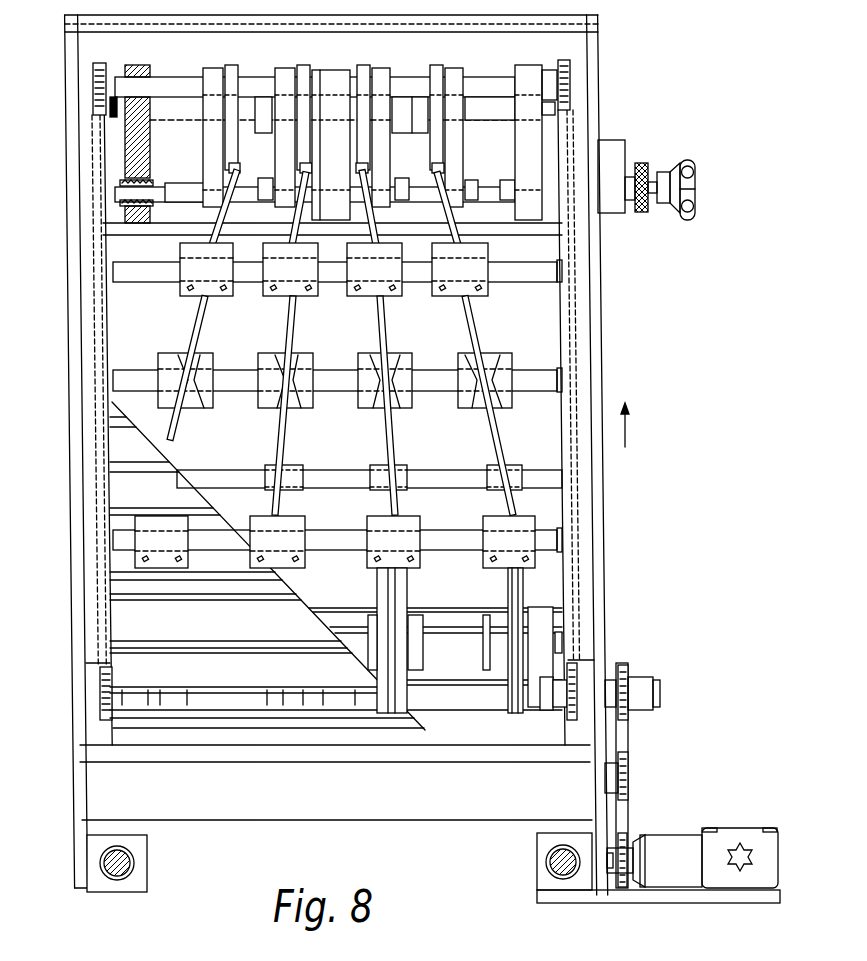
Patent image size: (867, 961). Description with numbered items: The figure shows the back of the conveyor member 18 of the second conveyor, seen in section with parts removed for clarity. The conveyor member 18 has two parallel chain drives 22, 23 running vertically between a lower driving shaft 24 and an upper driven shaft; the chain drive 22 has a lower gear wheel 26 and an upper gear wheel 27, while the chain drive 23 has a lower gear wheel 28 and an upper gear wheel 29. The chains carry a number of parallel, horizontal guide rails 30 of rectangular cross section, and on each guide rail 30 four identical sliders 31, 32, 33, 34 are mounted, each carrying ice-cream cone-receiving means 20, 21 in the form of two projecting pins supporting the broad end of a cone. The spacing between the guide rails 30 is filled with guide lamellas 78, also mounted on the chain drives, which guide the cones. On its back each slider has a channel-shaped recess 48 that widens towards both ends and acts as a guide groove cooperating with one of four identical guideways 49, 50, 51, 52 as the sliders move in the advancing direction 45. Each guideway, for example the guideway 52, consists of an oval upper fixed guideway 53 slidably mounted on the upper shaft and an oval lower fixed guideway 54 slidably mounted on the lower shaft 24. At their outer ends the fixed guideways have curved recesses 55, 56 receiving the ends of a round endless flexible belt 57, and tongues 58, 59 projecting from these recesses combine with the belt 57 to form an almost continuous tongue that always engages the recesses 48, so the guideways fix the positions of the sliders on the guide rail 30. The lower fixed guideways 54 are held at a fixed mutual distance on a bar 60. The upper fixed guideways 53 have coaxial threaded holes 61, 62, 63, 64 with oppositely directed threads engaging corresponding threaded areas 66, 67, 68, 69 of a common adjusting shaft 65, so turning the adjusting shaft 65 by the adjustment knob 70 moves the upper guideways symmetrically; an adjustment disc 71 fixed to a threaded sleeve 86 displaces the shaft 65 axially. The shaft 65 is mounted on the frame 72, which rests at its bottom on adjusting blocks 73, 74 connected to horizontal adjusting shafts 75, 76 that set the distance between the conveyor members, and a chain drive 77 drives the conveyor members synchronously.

The conveyor member 18 is at (587, 33).
The ice-cream cone-receiving means 20 is at (205, 293).
The ice-cream cone-receiving means 21 is at (185, 290).
The chain drive 22 is at (575, 688).
The chain drive 23 is at (98, 665).
The lower driving shaft 24 is at (465, 690).
The lower gear wheel 26 is at (628, 662).
The upper gear wheel 27 is at (587, 78).
The lower gear wheel 28 is at (104, 700).
The upper gear wheel 29 is at (104, 62).
The guide rail 30 is at (548, 273).
The slider 31 is at (215, 340).
The slider 32 is at (300, 363).
The slider 33 is at (412, 337).
The slider 34 is at (508, 363).
The advancing direction 45 is at (626, 440).
The recess 48 is at (190, 410).
The guideway 49 is at (177, 430).
The guideway 50 is at (283, 443).
The guideway 51 is at (390, 437).
The guideway 52 is at (503, 425).
The upper fixed guideway 53 is at (212, 68).
The lower fixed guideway 54 is at (483, 690).
The curved recess 55 is at (237, 167).
The curved recess 56 is at (532, 473).
The endless flexible belt 57 is at (193, 330).
The tongue 58 is at (232, 90).
The tongue 59 is at (510, 647).
The bar 60 is at (440, 477).
The threaded hole 61 is at (237, 197).
The threaded hole 62 is at (283, 205).
The threaded hole 63 is at (383, 197).
The threaded hole 64 is at (457, 187).
The adjusting shaft 65 is at (575, 232).
The threaded area 66 is at (186, 193).
The threaded area 67 is at (273, 187).
The threaded area 68 is at (397, 187).
The threaded area 69 is at (492, 182).
The adjustment knob 70 is at (691, 175).
The adjustment disc 71 is at (661, 172).
The frame 72 is at (601, 580).
The adjusting block 73 is at (138, 845).
The adjusting block 74 is at (547, 838).
The adjusting shaft 75 is at (133, 863).
The adjusting shaft 76 is at (560, 862).
The chain drive 77 is at (620, 743).
The guide lamella 78 is at (258, 667).
The sleeve 86 is at (638, 165).